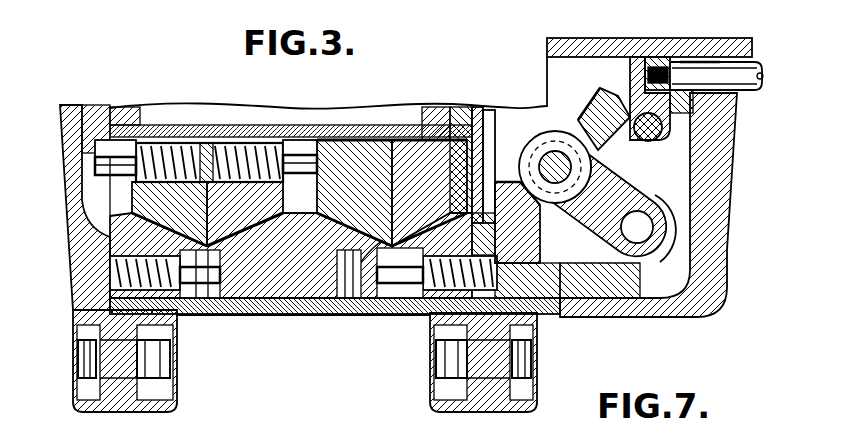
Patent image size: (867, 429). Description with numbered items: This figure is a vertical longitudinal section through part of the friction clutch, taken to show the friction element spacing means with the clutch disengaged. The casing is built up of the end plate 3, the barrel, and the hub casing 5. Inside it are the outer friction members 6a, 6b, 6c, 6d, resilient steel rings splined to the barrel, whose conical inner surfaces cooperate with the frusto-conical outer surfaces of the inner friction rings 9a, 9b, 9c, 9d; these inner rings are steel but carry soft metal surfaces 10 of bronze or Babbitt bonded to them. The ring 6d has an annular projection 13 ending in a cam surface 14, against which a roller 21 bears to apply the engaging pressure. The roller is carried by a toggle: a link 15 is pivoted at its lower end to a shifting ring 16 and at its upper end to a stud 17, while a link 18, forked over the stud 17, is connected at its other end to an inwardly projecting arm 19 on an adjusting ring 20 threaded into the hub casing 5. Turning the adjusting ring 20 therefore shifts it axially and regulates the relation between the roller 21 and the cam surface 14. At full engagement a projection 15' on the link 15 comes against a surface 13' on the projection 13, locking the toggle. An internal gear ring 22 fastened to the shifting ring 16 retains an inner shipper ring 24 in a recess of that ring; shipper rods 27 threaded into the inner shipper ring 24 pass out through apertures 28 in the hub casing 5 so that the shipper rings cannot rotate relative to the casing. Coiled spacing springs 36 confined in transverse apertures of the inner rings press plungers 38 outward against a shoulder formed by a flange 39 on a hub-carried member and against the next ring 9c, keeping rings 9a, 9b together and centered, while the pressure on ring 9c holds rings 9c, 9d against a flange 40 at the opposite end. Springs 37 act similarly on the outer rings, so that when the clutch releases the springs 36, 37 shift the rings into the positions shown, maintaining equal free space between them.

The end plate 3 is at (83, 306).
The hub casing 5 is at (610, 300).
The friction member 6a is at (130, 240).
The friction member 6b is at (263, 285).
The friction member 6c is at (322, 310).
The friction member 6d is at (301, 274).
The friction ring 9a is at (140, 210).
The friction ring 9b is at (257, 214).
The friction ring 9c is at (348, 152).
The friction ring 9d is at (410, 152).
The soft metal surface 10 is at (200, 262).
The annular projection 13 is at (528, 224).
The stop surface 13' is at (508, 166).
The cam surface 14 is at (542, 207).
The link 15 is at (604, 119).
The projection 15' is at (584, 98).
The shifting ring 16 is at (640, 100).
The stud 17 is at (542, 153).
The link 18 is at (637, 192).
The arm 19 is at (657, 258).
The adjusting ring 20 is at (573, 300).
The roller 21 is at (560, 140).
The internal gear ring 22 is at (693, 105).
The inner shipper ring 24 is at (655, 55).
The shipper rod 27 is at (727, 72).
The aperture 28 is at (700, 62).
The coiled spacing spring 36 is at (177, 133).
The spring 37 is at (113, 272).
The plunger 38 is at (308, 104).
The flange 39 is at (83, 152).
The flange 40 is at (473, 153).